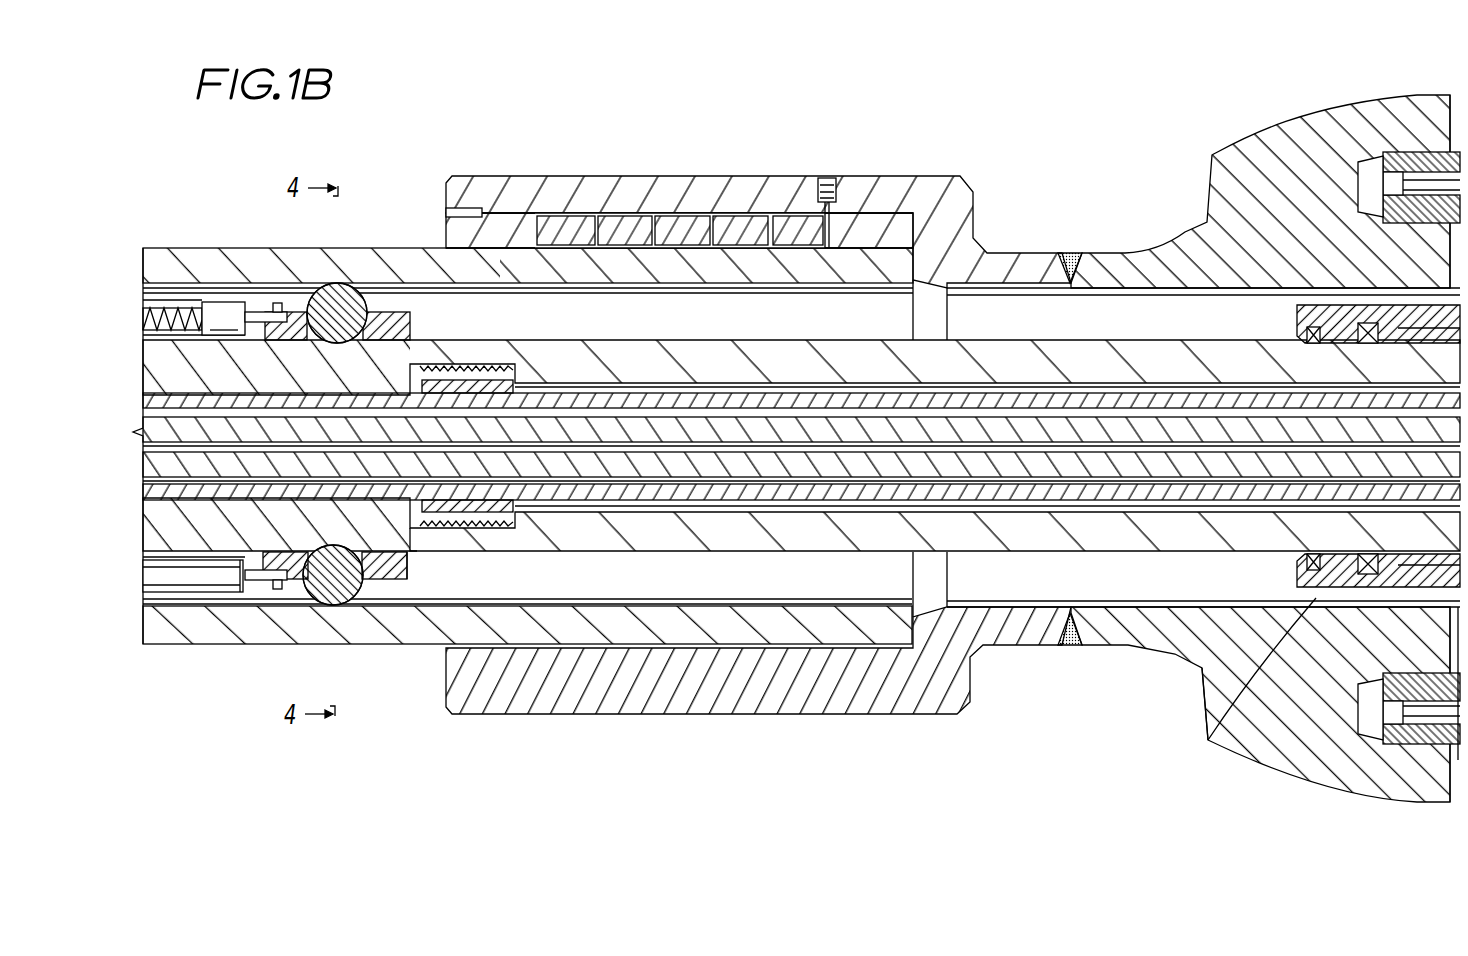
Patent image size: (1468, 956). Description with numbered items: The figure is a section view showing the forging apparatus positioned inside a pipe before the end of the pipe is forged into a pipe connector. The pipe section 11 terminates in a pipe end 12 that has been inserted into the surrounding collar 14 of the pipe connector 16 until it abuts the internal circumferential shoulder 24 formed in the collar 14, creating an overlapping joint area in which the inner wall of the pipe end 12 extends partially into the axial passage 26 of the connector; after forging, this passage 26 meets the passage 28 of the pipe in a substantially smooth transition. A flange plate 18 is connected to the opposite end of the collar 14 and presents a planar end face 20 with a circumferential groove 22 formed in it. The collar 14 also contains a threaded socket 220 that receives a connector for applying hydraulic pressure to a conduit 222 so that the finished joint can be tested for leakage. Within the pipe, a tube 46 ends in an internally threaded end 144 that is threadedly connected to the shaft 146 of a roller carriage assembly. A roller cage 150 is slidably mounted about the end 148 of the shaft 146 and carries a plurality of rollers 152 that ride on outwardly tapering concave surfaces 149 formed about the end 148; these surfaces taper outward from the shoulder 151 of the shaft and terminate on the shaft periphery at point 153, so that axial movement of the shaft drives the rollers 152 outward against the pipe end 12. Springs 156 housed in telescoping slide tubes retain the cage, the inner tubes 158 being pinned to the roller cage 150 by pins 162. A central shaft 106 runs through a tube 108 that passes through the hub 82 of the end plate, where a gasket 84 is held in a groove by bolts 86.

The pipe section 11 is at (212, 248).
The pipe end 12 is at (852, 272).
The collar 14 is at (650, 190).
The pipe connector 16 is at (1034, 240).
The flange plate 18 is at (1257, 160).
The planar end face 20 is at (1455, 112).
The circumferential groove 22 is at (1372, 167).
The internal circumferential shoulder 24 is at (905, 268).
The axial passage 26 is at (1116, 313).
The passage 28 is at (448, 310).
The tube 46 is at (1008, 540).
The hub 82 is at (1208, 740).
The gasket 84 is at (1423, 737).
The bolts 86 is at (1322, 765).
The central shaft 106 is at (838, 465).
The tube 108 is at (887, 497).
The internally threaded end 144 is at (487, 530).
The shaft 146 is at (388, 385).
The end of the shaft 148 is at (500, 520).
The outwardly tapering concave surfaces 149 is at (408, 585).
The roller cage 150 is at (392, 585).
The shoulder 151 is at (420, 552).
The rollers 152 is at (320, 582).
The point 153 is at (240, 576).
The springs 156 is at (162, 300).
The inner tubes 158 is at (232, 308).
The pins 162 is at (283, 300).
The threaded socket 220 is at (822, 175).
The conduit 222 is at (748, 213).